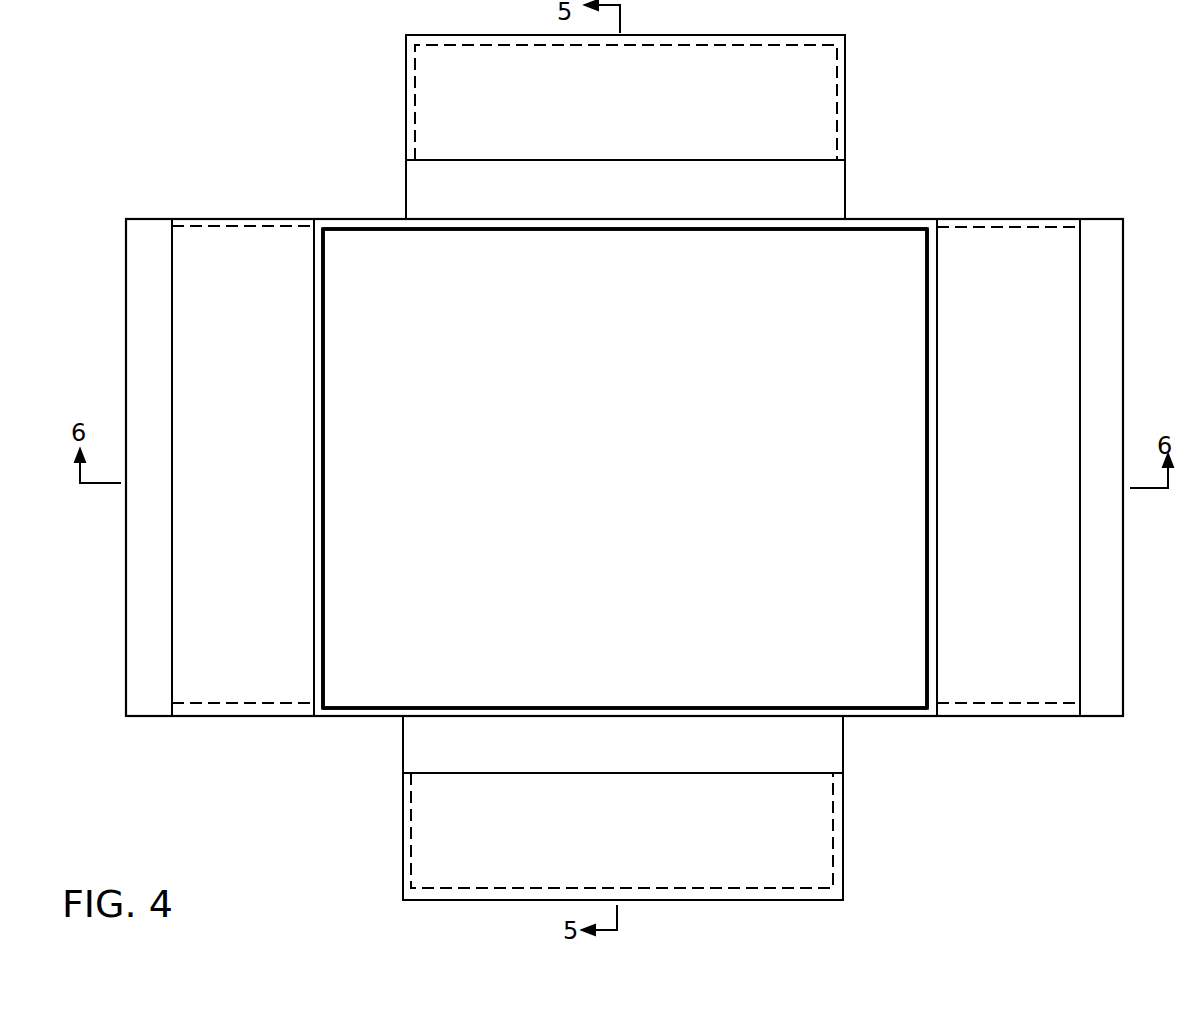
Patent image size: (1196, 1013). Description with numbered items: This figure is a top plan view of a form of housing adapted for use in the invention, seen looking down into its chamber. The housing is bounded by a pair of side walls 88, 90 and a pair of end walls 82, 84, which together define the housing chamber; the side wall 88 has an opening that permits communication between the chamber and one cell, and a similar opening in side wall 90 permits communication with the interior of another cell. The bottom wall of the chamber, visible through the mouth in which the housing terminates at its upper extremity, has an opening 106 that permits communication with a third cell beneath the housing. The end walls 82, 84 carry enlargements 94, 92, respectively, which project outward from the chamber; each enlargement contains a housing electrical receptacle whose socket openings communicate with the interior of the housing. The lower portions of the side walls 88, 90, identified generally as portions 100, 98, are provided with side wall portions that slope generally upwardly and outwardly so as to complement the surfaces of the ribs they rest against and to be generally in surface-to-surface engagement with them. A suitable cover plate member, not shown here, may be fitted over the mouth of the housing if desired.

The end wall 82 is at (797, 227).
The end wall 84 is at (752, 710).
The side wall 88 is at (325, 523).
The side wall 90 is at (928, 509).
The enlargement 92 is at (830, 830).
The enlargement 94 is at (843, 105).
The lower portion of side wall 98 is at (1033, 689).
The lower portion of side wall 100 is at (245, 690).
The opening 106 is at (867, 347).